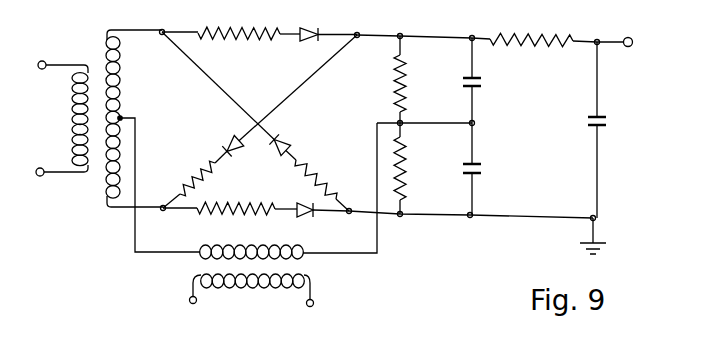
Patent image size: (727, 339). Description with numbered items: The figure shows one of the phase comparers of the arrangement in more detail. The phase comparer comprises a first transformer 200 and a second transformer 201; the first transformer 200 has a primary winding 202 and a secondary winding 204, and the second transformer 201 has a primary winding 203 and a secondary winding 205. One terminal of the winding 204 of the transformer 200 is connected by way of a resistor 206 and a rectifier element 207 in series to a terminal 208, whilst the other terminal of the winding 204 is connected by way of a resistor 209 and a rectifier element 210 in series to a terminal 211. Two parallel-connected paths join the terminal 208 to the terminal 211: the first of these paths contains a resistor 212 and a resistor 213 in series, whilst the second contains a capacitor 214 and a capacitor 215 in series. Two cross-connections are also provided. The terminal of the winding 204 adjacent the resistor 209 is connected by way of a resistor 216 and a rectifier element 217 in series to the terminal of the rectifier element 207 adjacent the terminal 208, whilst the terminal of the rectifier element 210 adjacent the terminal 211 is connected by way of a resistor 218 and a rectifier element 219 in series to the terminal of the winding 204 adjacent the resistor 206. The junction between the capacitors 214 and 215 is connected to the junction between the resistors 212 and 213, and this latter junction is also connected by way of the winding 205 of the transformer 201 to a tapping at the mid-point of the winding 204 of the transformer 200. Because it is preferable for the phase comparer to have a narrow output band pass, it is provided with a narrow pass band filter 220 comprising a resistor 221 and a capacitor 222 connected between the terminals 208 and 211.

The first transformer 200 is at (103, 62).
The second transformer 201 is at (340, 286).
The primary winding 202 is at (62, 118).
The primary winding 203 is at (252, 293).
The secondary winding 204 is at (153, 141).
The secondary winding 205 is at (288, 191).
The resistor 206 is at (221, 21).
The rectifier element 207 is at (318, 47).
The terminal 208 is at (470, 36).
The resistor 209 is at (219, 197).
The rectifier element 210 is at (312, 224).
The terminal 211 is at (471, 228).
The resistor 212 is at (417, 79).
The resistor 213 is at (416, 168).
The capacitor 214 is at (488, 80).
The capacitor 215 is at (487, 169).
The resistor 216 is at (187, 183).
The rectifier element 217 is at (282, 99).
The resistor 218 is at (322, 183).
The rectifier element 219 is at (238, 96).
The narrow pass band filter 220 is at (581, 88).
The resistor 221 is at (548, 26).
The capacitor 222 is at (612, 130).